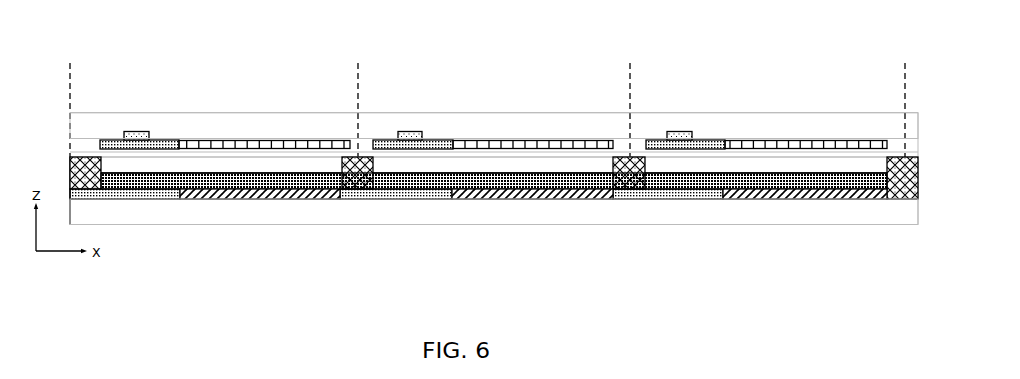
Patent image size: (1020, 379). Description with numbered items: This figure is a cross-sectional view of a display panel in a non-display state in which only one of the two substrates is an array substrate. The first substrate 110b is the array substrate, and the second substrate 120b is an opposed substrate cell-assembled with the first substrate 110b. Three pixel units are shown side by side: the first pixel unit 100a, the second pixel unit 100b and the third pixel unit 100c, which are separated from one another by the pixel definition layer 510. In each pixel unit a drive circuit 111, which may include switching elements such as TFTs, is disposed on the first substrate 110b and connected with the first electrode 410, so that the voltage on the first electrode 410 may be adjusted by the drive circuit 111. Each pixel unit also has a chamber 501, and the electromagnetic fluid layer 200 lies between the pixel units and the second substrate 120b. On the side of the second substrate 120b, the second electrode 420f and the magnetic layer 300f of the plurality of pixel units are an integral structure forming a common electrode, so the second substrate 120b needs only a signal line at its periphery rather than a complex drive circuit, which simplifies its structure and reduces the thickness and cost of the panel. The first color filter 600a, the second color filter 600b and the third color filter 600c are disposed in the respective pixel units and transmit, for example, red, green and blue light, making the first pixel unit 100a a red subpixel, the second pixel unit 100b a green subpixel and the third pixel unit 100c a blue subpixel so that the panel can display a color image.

The first pixel unit 100a is at (358, 72).
The second pixel unit 100b is at (630, 72).
The third pixel unit 100c is at (905, 79).
The first substrate 110b is at (494, 113).
The drive circuit 111 is at (432, 114).
The second substrate 120b is at (494, 223).
The electromagnetic fluid layer 200 is at (494, 210).
The magnetic layer 300f is at (533, 218).
The first electrode 410 is at (377, 115).
The second electrode 420f is at (396, 218).
The chamber 501 is at (494, 130).
The pixel definition layer 510 is at (473, 176).
The first color filter 600a is at (264, 118).
The second color filter 600b is at (533, 118).
The third color filter 600c is at (806, 118).